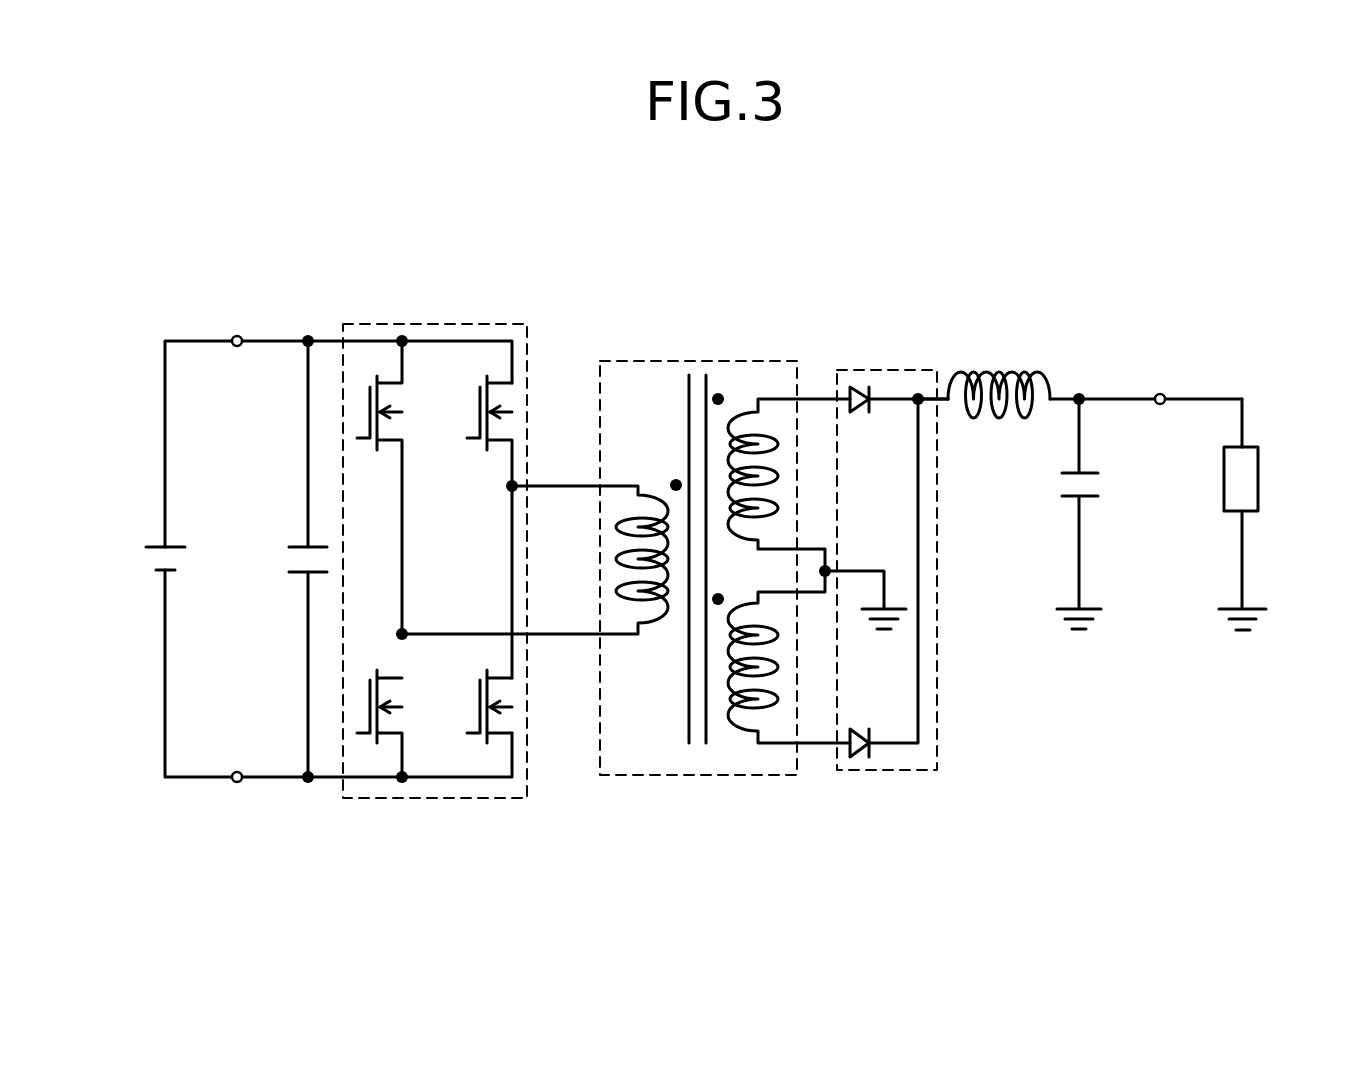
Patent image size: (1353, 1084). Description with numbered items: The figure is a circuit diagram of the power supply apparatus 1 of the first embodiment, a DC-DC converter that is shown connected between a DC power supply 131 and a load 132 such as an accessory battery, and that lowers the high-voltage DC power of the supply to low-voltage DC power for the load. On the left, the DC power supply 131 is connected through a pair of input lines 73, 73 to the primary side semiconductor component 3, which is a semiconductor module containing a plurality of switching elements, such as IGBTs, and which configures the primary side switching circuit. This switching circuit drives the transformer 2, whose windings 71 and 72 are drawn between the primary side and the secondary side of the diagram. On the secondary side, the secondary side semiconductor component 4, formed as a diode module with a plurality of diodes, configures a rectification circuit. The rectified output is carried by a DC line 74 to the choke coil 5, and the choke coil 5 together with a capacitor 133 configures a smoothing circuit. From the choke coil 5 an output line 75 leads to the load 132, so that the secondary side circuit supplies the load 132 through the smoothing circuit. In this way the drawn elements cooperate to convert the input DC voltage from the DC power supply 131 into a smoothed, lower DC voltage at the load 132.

The power supply apparatus 1 is at (1080, 800).
The transformer 2 is at (715, 360).
The primary side semiconductor component 3 is at (450, 800).
The secondary side semiconductor component 4 is at (895, 772).
The choke coil 5 is at (993, 372).
The primary winding 71 is at (578, 480).
The secondary winding 72 is at (810, 395).
The input line 73 is at (328, 340).
The DC line 74 is at (948, 397).
The output line 75 is at (1110, 399).
The DC power supply 131 is at (157, 558).
The load 132 is at (1250, 460).
The capacitor 133 is at (1090, 487).